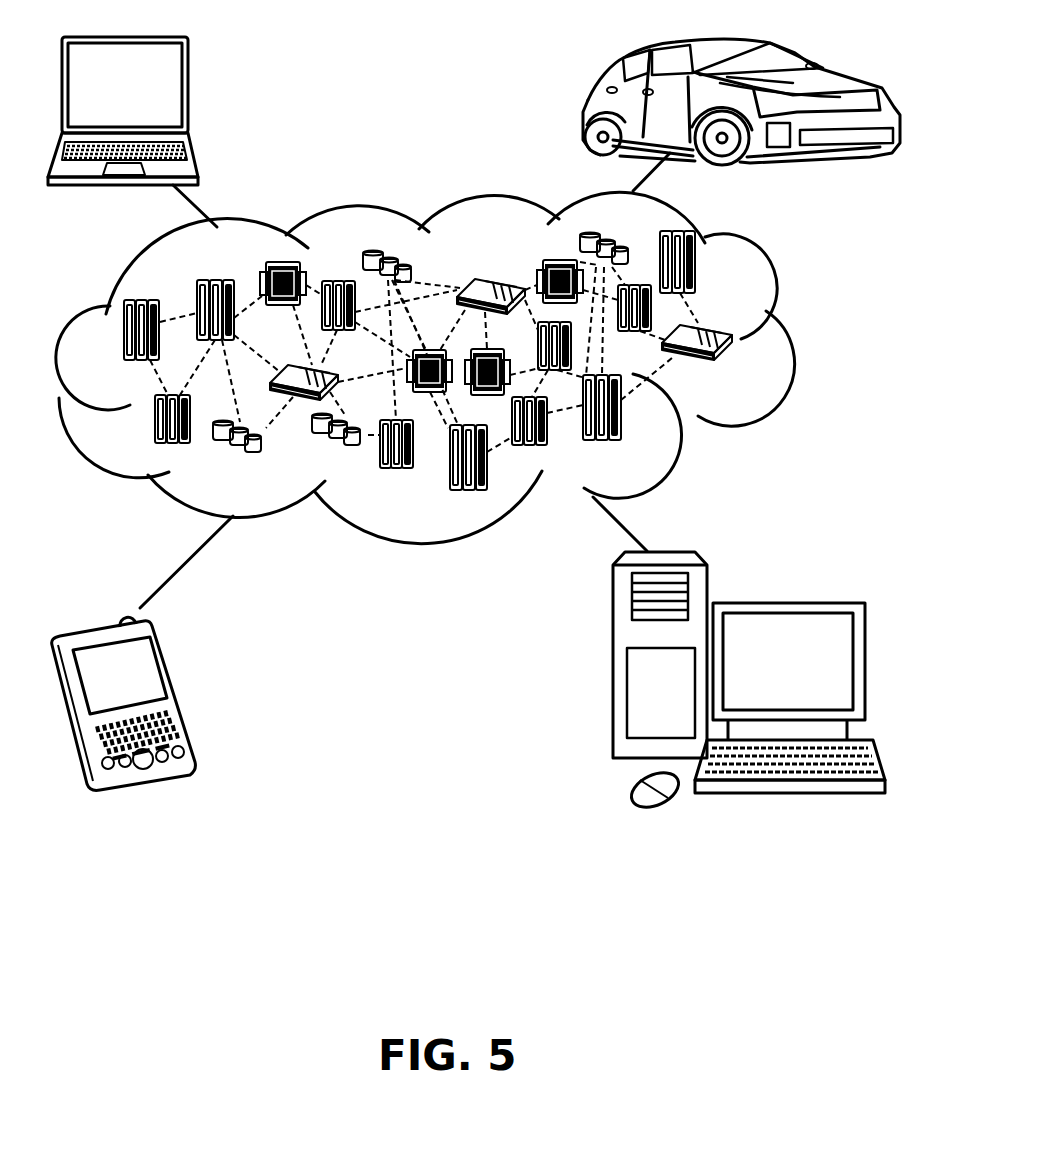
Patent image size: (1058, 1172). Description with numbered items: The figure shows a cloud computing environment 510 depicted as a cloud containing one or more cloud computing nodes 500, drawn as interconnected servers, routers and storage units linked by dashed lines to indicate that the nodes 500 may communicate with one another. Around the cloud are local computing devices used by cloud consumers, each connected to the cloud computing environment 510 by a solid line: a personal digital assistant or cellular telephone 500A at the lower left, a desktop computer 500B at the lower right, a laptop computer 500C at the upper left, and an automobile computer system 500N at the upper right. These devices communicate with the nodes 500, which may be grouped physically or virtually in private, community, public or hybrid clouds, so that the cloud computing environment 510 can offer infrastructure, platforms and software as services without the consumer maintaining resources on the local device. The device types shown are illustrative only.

The cloud computing nodes 500 is at (752, 387).
The cloud computing environment 510 is at (789, 344).
The personal digital assistant (PDA) or cellular telephone 500A is at (187, 688).
The desktop computer 500B is at (783, 603).
The laptop computer 500C is at (188, 91).
The automobile computer system 500N is at (586, 109).